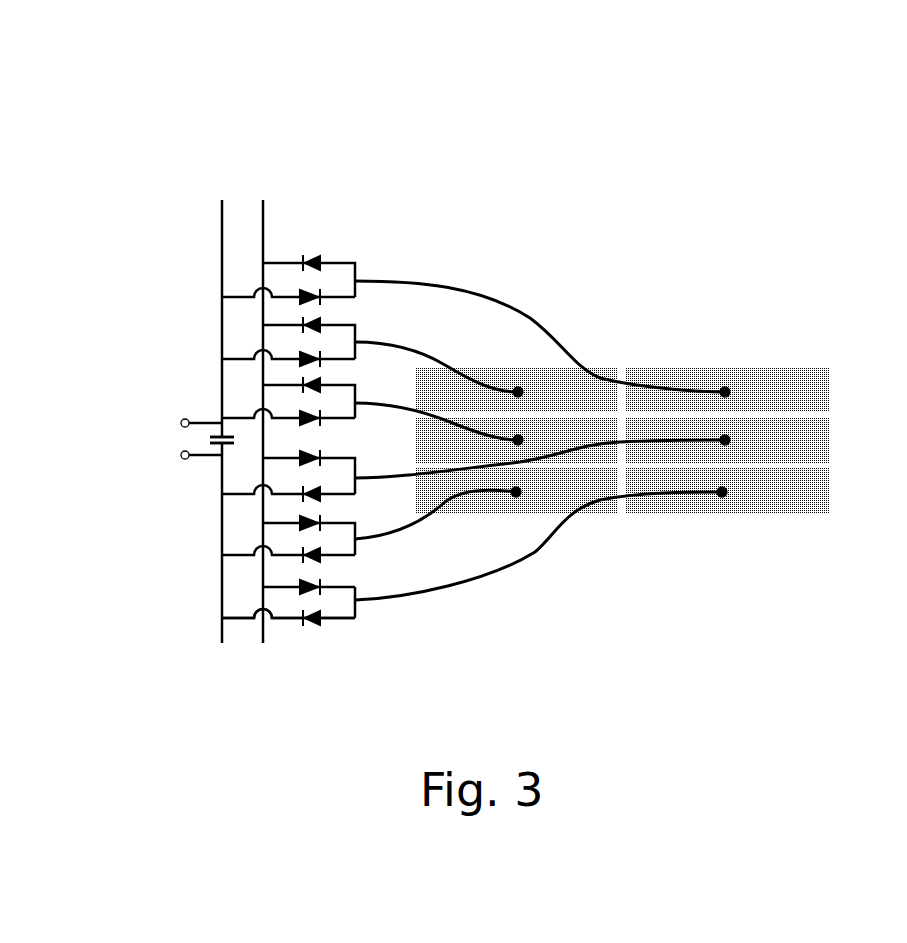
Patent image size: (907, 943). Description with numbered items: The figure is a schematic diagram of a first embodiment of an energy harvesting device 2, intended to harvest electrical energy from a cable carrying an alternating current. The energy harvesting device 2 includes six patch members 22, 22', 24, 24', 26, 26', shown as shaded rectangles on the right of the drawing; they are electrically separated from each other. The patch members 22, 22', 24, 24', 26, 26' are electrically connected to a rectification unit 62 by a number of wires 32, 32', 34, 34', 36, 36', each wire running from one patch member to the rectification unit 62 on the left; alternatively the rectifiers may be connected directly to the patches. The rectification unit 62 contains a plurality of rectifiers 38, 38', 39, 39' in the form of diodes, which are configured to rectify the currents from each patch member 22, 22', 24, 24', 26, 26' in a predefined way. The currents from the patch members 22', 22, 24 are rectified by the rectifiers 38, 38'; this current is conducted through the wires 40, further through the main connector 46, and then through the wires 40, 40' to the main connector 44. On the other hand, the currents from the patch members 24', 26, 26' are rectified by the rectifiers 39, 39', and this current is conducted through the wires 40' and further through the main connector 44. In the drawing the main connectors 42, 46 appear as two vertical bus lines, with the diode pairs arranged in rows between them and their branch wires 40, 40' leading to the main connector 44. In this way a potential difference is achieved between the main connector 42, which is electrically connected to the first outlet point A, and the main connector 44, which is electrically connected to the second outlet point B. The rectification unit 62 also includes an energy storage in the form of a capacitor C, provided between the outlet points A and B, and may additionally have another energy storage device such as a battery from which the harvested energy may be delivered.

The energy harvesting device 2 is at (715, 195).
The patch member 22 is at (516, 349).
The patch member 24 is at (530, 377).
The patch member 26 is at (516, 512).
The patch member 22' is at (727, 348).
The patch member 24' is at (765, 455).
The patch member 26' is at (727, 526).
The wire 32 is at (436, 350).
The wire 32' is at (540, 301).
The wire 34 is at (436, 434).
The wire 34' is at (626, 432).
The wire 36 is at (435, 534).
The wire 36' is at (538, 567).
The rectifier 38 is at (339, 202).
The rectifier 38' is at (243, 323).
The rectifier 39 is at (282, 659).
The rectifier 39' is at (297, 671).
The wire 40 is at (352, 356).
The wire 40' is at (392, 391).
The main connector 42 is at (222, 226).
The main connector 44 is at (222, 585).
The main connector 46 is at (263, 226).
The rectification unit 62 is at (193, 172).
The first outlet point A is at (181, 423).
The second outlet point B is at (181, 456).
The capacitor C is at (200, 442).